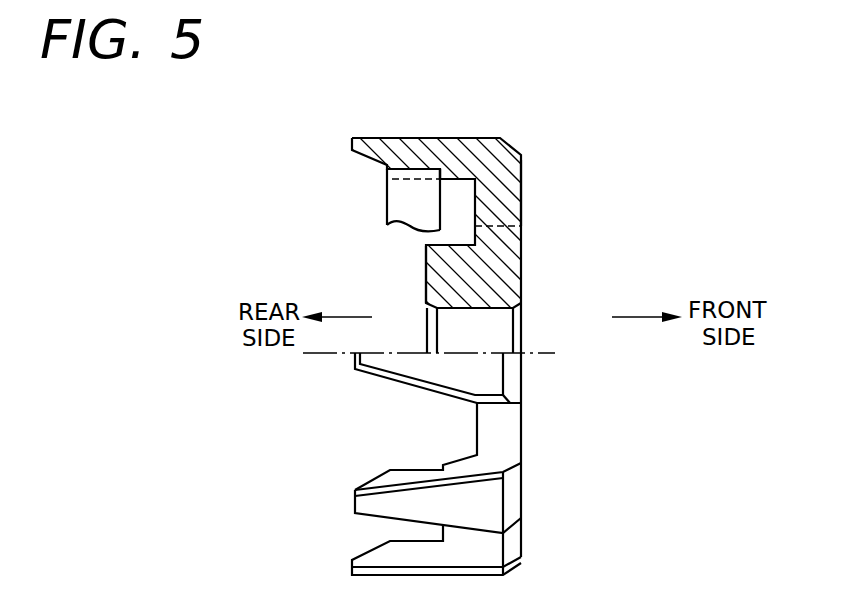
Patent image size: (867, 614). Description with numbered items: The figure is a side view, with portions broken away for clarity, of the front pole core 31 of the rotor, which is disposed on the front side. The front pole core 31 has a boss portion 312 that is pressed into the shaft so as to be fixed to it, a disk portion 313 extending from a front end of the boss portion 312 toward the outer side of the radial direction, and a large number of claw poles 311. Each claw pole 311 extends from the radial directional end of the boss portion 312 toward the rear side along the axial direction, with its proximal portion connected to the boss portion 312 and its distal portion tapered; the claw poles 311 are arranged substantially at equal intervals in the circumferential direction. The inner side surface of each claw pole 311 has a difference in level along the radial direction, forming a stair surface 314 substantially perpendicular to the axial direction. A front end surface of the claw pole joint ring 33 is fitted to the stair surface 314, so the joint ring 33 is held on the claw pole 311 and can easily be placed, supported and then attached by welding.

The front pole core 31 is at (505, 128).
The claw pole 311 is at (392, 138).
The boss portion 312 is at (502, 277).
The disk portion 313 is at (498, 190).
The stair surface 314 is at (432, 138).
The claw pole joint ring 33 is at (390, 209).